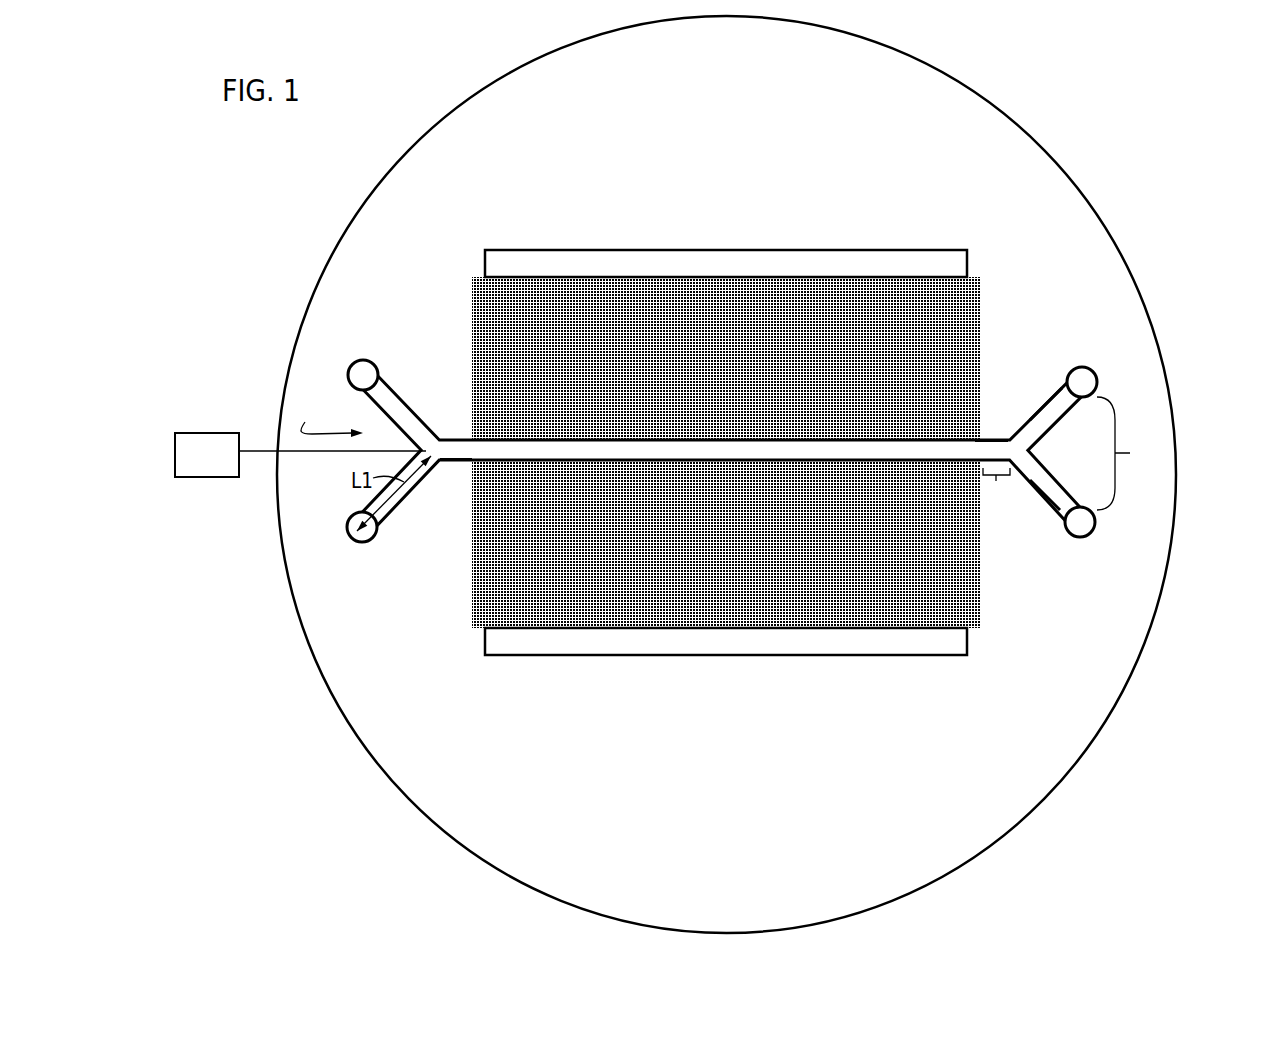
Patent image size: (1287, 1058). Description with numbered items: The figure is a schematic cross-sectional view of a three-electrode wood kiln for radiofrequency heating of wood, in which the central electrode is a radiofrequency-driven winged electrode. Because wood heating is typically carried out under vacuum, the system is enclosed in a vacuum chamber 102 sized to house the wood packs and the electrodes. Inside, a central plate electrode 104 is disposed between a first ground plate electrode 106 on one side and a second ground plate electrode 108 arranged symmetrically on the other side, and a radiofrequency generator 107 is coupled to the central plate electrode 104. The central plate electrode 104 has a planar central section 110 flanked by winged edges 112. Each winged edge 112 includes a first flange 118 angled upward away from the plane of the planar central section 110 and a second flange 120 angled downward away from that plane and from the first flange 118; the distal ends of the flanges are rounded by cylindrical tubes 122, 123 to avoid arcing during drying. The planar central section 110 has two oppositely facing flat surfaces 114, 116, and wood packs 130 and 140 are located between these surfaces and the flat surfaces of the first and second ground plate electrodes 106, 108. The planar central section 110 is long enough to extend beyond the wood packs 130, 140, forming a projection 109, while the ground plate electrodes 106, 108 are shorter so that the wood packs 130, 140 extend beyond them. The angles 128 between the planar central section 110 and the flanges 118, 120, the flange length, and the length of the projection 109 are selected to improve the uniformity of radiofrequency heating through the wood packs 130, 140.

The vacuum chamber 102 is at (1080, 190).
The central plate electrode 104 is at (734, 485).
The first ground plate electrode 106 is at (727, 243).
The radiofrequency generator 107 is at (189, 466).
The second ground plate electrode 108 is at (768, 656).
The projection 109 is at (1000, 503).
The planar central section 110 is at (448, 463).
The winged edges 112 is at (1132, 453).
The flat surface 114 is at (982, 440).
The flat surface 116 is at (472, 461).
The first flange 118 is at (1052, 398).
The second flange 120 is at (1050, 510).
The cylindrical tube 122 is at (1085, 383).
The cylindrical tube 123 is at (1085, 525).
The angle 128 is at (325, 418).
The wood pack 130 is at (870, 339).
The wood pack 140 is at (868, 520).